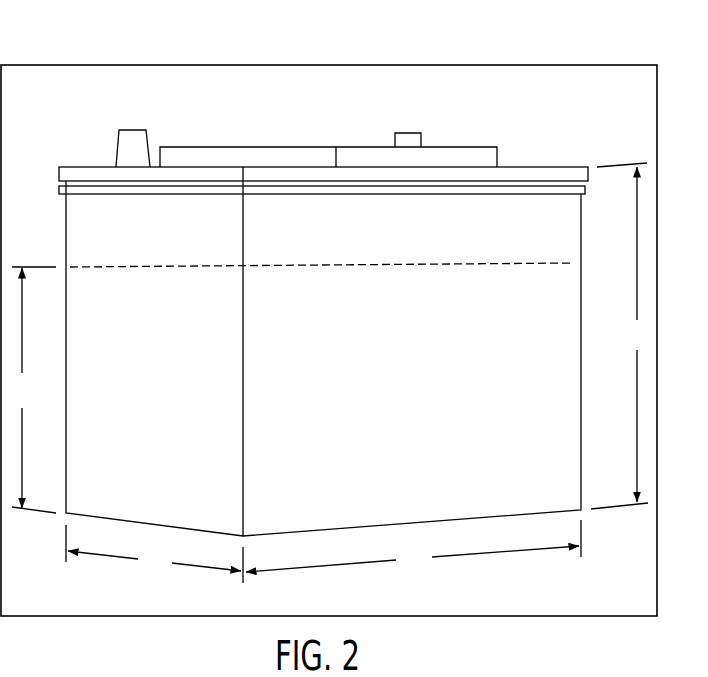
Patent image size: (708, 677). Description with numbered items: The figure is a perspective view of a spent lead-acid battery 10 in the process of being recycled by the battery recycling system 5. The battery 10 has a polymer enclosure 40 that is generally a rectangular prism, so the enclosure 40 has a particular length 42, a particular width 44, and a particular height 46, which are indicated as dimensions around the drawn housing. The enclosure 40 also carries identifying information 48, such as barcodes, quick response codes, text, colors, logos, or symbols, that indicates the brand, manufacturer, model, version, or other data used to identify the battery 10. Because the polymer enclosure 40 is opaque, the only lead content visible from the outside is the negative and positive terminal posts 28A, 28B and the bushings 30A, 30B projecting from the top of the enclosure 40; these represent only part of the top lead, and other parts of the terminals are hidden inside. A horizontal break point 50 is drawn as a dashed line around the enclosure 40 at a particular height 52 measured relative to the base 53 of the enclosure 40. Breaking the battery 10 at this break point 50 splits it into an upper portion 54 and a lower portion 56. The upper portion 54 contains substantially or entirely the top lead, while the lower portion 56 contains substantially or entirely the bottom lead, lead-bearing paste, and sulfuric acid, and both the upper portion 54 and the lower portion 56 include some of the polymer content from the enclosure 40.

The battery recycling system 5 is at (329, 64).
The lead-acid battery 10 is at (262, 121).
The negative terminal post 28A is at (133, 130).
The positive terminal post 28B is at (410, 133).
The bushing 30A is at (112, 152).
The bushing 30B is at (424, 141).
The polymer enclosure 40 is at (527, 172).
The length 42 is at (413, 548).
The width 44 is at (154, 554).
The height 46 is at (619, 336).
The identifying information 48 is at (413, 404).
The break point 50 is at (88, 266).
The height 52 is at (34, 390).
The base 53 is at (312, 539).
The upper portion 54 is at (50, 210).
The lower portion 56 is at (60, 355).